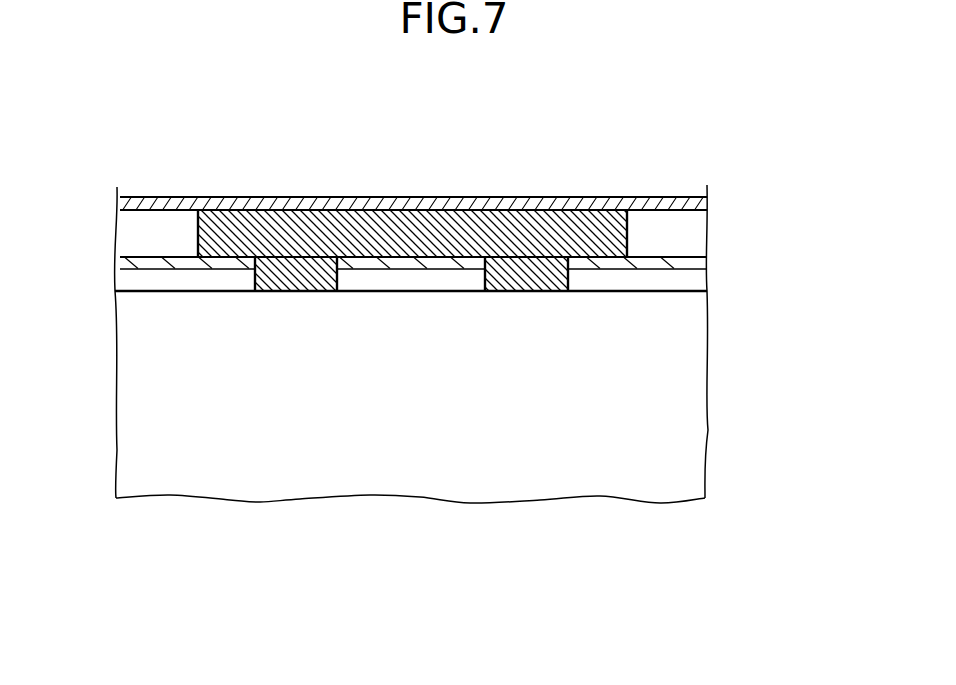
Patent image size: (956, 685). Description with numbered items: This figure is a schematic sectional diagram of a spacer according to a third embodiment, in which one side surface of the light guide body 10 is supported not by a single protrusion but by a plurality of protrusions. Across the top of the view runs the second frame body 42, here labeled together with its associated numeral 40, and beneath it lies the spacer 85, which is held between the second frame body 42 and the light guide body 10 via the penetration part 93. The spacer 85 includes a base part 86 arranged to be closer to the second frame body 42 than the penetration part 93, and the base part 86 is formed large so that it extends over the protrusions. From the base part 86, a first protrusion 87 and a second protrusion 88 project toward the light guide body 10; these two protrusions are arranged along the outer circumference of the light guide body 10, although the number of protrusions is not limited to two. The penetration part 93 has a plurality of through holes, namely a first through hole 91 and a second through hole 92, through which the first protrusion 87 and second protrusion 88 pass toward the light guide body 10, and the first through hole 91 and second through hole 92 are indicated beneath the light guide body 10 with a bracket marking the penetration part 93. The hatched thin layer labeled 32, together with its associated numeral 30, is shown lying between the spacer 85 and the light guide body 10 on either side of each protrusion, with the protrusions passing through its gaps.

The light guide body 10 is at (683, 408).
The second frame body 42 is at (152, 197).
The upper layer structure 40 is at (413, 174).
The conductive layer 32 is at (667, 265).
The conductive structure 30 is at (427, 204).
The spacer 85 is at (547, 137).
The base part 86 is at (417, 225).
The first protrusion 87 is at (295, 270).
The second protrusion 88 is at (528, 270).
The first through hole 91 is at (488, 258).
The second through hole 92 is at (257, 262).
The penetration part 93 is at (410, 432).